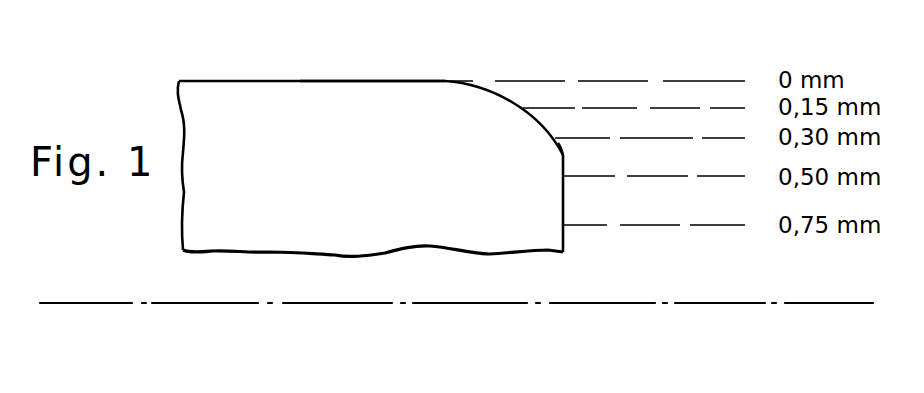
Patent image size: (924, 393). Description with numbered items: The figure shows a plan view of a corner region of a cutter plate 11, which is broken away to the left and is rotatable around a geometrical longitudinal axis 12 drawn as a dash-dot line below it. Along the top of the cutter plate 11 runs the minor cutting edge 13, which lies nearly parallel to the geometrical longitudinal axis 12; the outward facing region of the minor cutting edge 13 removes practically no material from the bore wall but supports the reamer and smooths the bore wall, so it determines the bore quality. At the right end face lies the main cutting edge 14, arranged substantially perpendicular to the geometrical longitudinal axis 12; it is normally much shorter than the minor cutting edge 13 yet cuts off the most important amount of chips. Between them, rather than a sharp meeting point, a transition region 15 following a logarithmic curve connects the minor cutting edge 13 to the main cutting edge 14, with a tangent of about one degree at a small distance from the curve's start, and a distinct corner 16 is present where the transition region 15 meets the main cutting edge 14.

The cutter plate 11 is at (354, 185).
The geometrical longitudinal axis 12 is at (452, 303).
The minor cutting edge 13 is at (314, 81).
The main cutting edge 14 is at (563, 200).
The transition region 15 is at (512, 100).
The corner 16 is at (563, 155).